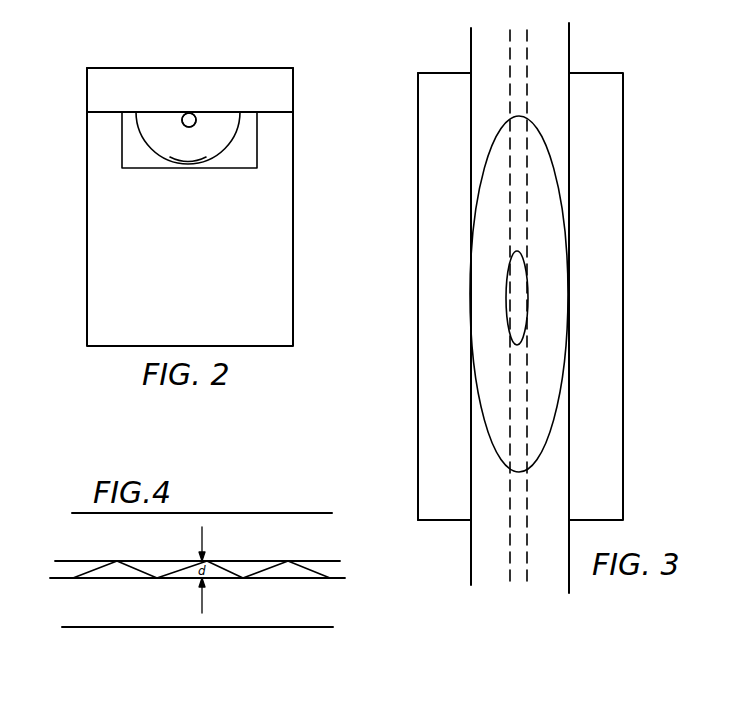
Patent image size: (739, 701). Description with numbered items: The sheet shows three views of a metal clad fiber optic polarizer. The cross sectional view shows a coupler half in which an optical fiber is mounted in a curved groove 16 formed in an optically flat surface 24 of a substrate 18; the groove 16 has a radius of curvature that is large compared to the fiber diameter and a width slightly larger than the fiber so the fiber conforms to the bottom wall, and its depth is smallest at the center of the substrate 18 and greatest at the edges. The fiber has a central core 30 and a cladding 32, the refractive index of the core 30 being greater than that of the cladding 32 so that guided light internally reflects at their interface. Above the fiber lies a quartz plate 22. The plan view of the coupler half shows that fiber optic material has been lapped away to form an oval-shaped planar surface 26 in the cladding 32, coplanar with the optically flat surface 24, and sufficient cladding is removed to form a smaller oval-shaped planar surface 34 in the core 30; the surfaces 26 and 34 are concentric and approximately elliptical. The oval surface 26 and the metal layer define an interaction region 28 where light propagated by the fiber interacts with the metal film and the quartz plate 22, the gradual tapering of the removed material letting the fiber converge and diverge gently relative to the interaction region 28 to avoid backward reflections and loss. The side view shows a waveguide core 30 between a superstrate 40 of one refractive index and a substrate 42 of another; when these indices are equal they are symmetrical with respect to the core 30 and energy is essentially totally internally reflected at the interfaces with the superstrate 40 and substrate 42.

In FIG. 2, the curved groove 16 is at (150, 163).
In FIG. 2, the substrate 18 is at (293, 200).
In FIG. 3, the substrate 18 is at (418, 128).
In FIG. 2, the quartz plate 22 is at (122, 68).
In FIG. 2, the optically flat surface 24 is at (277, 111).
In FIG. 3, the optically flat surface 24 is at (437, 253).
In FIG. 2, the oval-shaped planar surface 26 is at (155, 111).
In FIG. 3, the oval-shaped planar surface 26 is at (547, 150).
In FIG. 2, the interaction region 28 is at (228, 107).
In FIG. 3, the interaction region 28 is at (451, 320).
In FIG. 2, the core 30 is at (196, 124).
In FIG. 3, the core 30 is at (527, 52).
In FIG. 4, the core 30 is at (325, 560).
In FIG. 2, the cladding 32 is at (197, 156).
In FIG. 3, the cladding 32 is at (471, 45).
In FIG. 2, the oval-shaped planar surface in the core 34 is at (188, 112).
In FIG. 3, the oval-shaped planar surface in the core 34 is at (528, 290).
In FIG. 4, the superstrate 40 is at (285, 513).
In FIG. 4, the substrate 42 is at (322, 627).